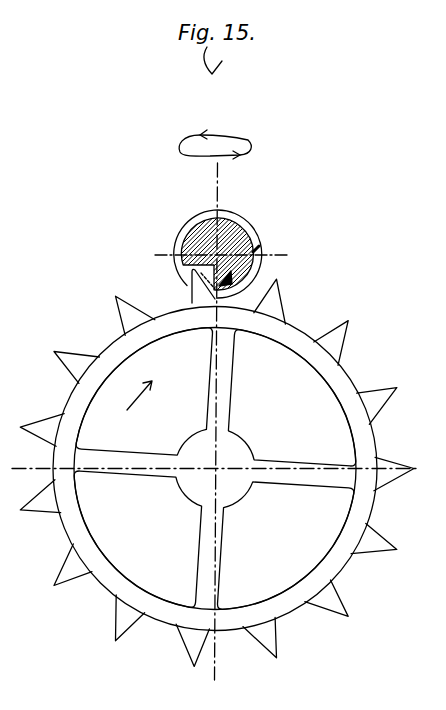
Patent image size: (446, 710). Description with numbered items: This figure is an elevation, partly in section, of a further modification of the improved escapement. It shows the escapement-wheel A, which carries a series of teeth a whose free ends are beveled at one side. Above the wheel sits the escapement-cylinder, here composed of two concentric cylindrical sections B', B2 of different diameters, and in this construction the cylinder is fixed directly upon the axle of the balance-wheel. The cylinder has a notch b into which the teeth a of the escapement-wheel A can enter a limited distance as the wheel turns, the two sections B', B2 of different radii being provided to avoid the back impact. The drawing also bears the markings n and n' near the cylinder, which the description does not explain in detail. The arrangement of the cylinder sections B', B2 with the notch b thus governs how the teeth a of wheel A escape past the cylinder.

The escapement-wheel A is at (215, 469).
The teeth a is at (217, 472).
The notch b is at (186, 281).
The concentric section of escapement-cylinder B' is at (221, 243).
The concentric section of escapement-cylinder B2 is at (252, 236).
The pin n' is at (269, 245).
The notch n is at (239, 285).